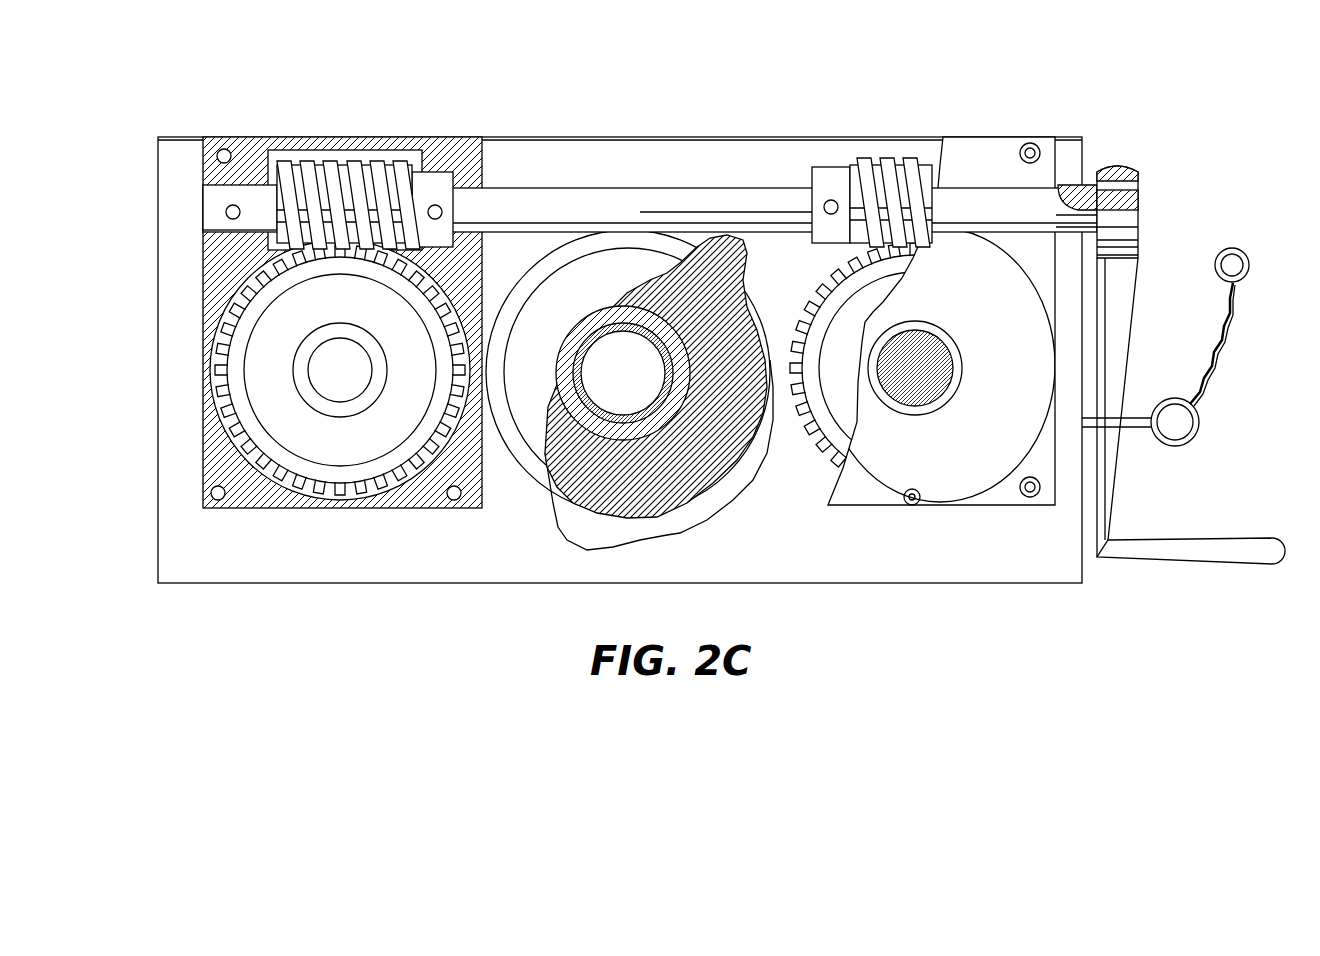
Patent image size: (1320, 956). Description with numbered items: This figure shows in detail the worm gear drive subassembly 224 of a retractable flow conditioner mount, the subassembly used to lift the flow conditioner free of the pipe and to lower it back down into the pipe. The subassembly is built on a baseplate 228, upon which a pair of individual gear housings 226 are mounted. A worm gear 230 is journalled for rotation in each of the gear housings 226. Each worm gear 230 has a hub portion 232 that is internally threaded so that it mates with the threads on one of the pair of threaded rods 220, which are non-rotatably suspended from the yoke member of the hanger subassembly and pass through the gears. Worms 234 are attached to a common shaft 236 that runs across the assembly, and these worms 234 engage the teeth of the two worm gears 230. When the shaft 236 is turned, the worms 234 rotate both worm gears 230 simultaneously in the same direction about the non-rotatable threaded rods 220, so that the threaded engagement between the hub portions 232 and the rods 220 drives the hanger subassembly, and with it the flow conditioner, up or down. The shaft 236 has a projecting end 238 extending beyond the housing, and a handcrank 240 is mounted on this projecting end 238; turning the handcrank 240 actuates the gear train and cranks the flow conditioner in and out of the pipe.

The threaded rod 220 is at (925, 365).
The worm gear drive subassembly 224 is at (1130, 148).
The gear housing 226 is at (217, 313).
The baseplate 228 is at (838, 557).
The worm gear 230 is at (227, 420).
The hub portion 232 is at (337, 412).
The worm 234 is at (372, 188).
The shaft 236 is at (740, 203).
The projecting end 238 is at (1085, 195).
The handcrank 240 is at (1130, 232).